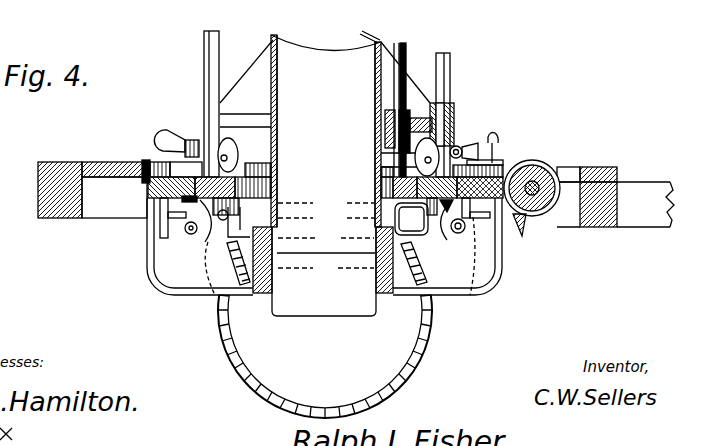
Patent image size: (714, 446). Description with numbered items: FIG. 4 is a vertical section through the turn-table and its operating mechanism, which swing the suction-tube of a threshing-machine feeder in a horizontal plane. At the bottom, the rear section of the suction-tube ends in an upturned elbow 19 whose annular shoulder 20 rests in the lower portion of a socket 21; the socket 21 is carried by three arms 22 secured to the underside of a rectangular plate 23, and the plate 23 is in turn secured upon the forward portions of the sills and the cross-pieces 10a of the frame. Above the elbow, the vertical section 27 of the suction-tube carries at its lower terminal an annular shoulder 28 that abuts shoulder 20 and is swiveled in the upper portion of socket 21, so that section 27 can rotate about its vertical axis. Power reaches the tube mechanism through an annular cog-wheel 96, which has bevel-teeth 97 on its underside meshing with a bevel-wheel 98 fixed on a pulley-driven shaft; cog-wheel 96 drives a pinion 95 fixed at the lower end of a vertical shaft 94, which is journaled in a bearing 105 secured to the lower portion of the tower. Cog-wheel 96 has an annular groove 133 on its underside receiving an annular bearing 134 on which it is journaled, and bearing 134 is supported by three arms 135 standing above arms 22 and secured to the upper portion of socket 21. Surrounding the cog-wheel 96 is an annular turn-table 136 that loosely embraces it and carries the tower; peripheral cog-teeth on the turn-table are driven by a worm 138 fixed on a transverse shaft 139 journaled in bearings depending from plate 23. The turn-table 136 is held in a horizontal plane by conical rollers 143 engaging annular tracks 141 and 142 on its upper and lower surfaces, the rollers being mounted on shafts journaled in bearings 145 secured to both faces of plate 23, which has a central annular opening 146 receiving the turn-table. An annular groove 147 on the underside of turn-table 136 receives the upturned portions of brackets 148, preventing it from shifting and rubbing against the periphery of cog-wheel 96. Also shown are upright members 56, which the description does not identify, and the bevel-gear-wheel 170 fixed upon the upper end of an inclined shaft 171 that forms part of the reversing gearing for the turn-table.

The cross-pieces 10a is at (632, 248).
The upturned elbow 19 is at (323, 311).
The annular shoulder 20 is at (326, 269).
The socket 21 is at (393, 301).
The arms 22 is at (160, 272).
The rectangular plate 23 is at (73, 162).
The vertical section of the suction-tube 27 is at (326, 129).
The annular shoulder 28 is at (326, 237).
The vertical rod 56 is at (204, 47).
The vertical shaft 94 is at (404, 48).
The pinion 95 is at (380, 186).
The annular cog-wheel 96 is at (262, 183).
The bevel-teeth 97 is at (332, 279).
The bevel-wheel 98 is at (325, 356).
The bearing 105 is at (455, 104).
The annular groove 133 is at (505, 163).
The annular bearing 134 is at (345, 210).
The arms 135 is at (345, 226).
The annular turn-table 136 is at (148, 187).
The worm 138 is at (553, 167).
The transverse shaft 139 is at (565, 171).
The annular track 141 is at (160, 158).
The annular track 142 is at (165, 219).
The conical rollers 143 is at (219, 145).
The bearings 145 is at (163, 130).
The annular opening 146 is at (142, 164).
The annular groove 147 is at (148, 198).
The brackets 148 is at (160, 233).
The bevel-gear-wheel 170 is at (523, 230).
The inclined shaft 171 is at (405, 300).